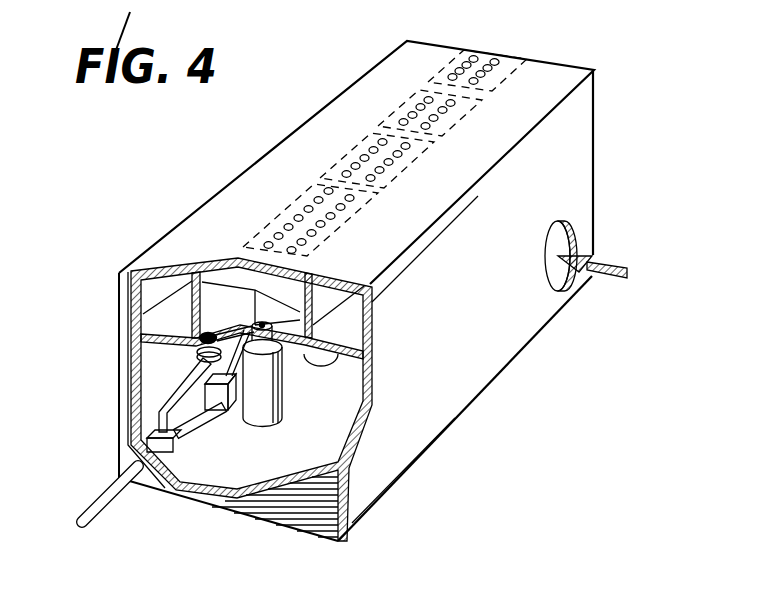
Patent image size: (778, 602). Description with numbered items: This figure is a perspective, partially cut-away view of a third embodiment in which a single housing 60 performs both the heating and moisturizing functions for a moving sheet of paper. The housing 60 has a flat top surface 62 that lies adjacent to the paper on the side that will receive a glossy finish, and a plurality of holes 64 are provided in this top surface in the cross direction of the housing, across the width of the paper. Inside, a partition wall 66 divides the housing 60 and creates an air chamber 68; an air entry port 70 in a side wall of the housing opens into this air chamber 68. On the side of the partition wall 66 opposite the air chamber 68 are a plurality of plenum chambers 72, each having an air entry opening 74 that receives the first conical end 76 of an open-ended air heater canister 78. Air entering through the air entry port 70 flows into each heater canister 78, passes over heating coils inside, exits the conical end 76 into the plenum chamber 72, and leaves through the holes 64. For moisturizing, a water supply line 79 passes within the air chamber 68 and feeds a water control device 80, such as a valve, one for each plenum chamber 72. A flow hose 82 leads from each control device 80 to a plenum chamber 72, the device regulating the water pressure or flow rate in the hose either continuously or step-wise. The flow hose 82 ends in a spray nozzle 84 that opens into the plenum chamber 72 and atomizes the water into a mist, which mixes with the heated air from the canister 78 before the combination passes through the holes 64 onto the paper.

The housing 60 is at (602, 116).
The flat top surface 62 is at (173, 246).
The holes 64 is at (318, 204).
The partition wall 66 is at (346, 330).
The air chamber 68 is at (362, 408).
The air entry port 70 is at (548, 286).
The plenum chambers 72 is at (258, 305).
The air entry opening 74 is at (328, 290).
The first conical end 76 is at (283, 385).
The air heater canister 78 is at (274, 423).
The water supply line 79 is at (98, 503).
The water control device 80 is at (206, 414).
The flow hose 82 is at (178, 396).
The spray nozzle 84 is at (203, 336).